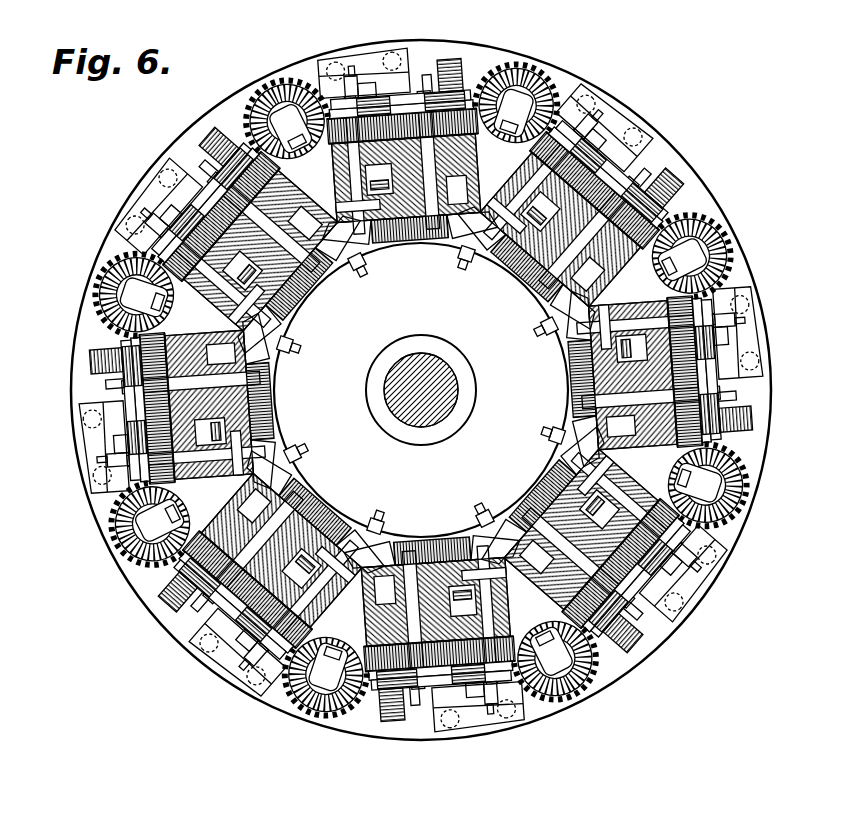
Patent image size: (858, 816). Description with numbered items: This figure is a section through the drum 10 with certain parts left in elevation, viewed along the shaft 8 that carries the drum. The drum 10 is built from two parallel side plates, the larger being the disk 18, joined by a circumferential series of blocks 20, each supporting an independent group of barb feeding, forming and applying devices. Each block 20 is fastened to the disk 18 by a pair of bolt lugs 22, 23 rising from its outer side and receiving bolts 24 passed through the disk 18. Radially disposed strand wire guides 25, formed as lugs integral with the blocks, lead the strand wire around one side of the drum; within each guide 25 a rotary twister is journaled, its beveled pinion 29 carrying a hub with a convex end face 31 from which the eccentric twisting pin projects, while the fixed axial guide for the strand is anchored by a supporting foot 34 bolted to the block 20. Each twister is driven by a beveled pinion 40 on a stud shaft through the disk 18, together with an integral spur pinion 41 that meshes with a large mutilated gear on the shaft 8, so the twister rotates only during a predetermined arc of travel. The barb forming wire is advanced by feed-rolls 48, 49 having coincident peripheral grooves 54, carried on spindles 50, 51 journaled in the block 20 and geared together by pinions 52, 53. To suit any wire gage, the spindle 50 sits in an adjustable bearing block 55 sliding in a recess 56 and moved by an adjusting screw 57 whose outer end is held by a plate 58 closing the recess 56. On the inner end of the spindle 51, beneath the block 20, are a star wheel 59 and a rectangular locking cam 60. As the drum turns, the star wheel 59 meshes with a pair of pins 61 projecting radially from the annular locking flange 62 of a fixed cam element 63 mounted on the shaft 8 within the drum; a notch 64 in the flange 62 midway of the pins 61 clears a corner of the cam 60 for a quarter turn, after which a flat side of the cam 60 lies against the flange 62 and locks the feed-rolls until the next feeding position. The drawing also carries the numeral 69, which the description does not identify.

The shaft 8 is at (446, 392).
The drum 10 is at (622, 103).
The side plate 18 is at (100, 445).
The block 20 is at (348, 222).
The bolt lug 22 is at (578, 93).
The bolt lug 23 is at (409, 57).
The bolt 24 is at (406, 23).
The strand wire guide 25 is at (447, 52).
The beveled pinion 29 is at (472, 72).
The convex end face 31 is at (661, 173).
The supporting foot 34 is at (421, 390).
The beveled pinion 40 is at (531, 64).
The spur pinion 41 is at (536, 76).
The feed-roll 48 is at (168, 200).
The feed-roll 49 is at (200, 176).
The spindle 50 is at (631, 130).
The spindle 51 is at (673, 190).
The pinion 52 is at (143, 240).
The pinion 53 is at (231, 128).
The peripheral groove 54 is at (784, 447).
The adjustable bearing block 55 is at (286, 330).
The recess 56 is at (305, 320).
The adjusting screw 57 is at (193, 460).
The plate 58 is at (278, 358).
The star wheel 59 is at (372, 290).
The locking cam 60 is at (341, 307).
The pin 61 is at (463, 520).
The annular locking flange 62 is at (358, 522).
The fixed cam element 63 is at (421, 390).
The notch 64 is at (459, 520).
The bolt hole 69 is at (181, 210).